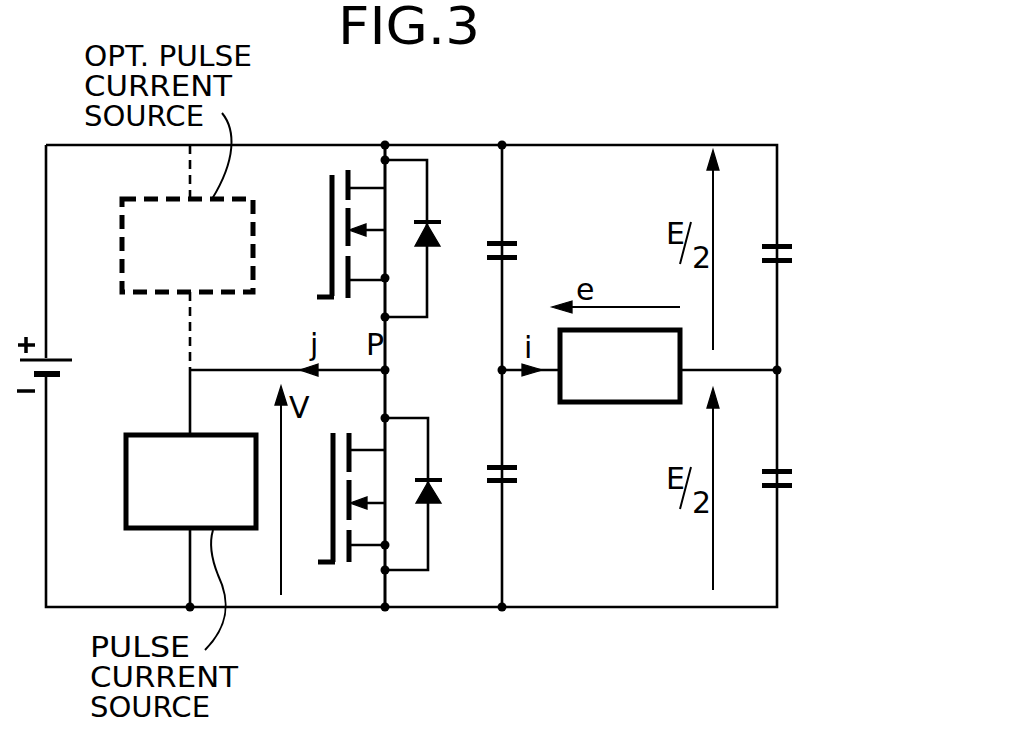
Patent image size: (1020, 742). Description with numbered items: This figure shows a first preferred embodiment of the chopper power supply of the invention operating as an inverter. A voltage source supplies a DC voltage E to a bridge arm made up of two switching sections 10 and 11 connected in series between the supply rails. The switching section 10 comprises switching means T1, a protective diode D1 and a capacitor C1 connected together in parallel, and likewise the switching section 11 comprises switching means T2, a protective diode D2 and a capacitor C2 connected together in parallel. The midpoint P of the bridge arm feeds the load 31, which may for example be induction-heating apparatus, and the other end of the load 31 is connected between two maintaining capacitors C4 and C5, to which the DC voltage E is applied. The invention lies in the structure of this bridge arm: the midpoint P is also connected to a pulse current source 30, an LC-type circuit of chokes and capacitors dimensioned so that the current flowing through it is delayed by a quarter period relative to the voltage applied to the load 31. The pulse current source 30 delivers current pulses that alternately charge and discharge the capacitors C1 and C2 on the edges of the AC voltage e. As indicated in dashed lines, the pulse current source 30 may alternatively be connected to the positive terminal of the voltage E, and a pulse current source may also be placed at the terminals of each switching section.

The DC voltage E is at (64, 358).
The pulse current source 30 is at (155, 510).
The switching section 10 is at (518, 215).
The switching section 11 is at (518, 581).
The switching means T1 is at (332, 218).
The switching means T2 is at (333, 480).
The protective diode D1 is at (430, 224).
The protective diode D2 is at (435, 498).
The capacitor C1 is at (514, 262).
The capacitor C2 is at (510, 484).
The maintaining capacitor C4 is at (792, 265).
The maintaining capacitor C5 is at (792, 490).
The load 31 is at (650, 385).